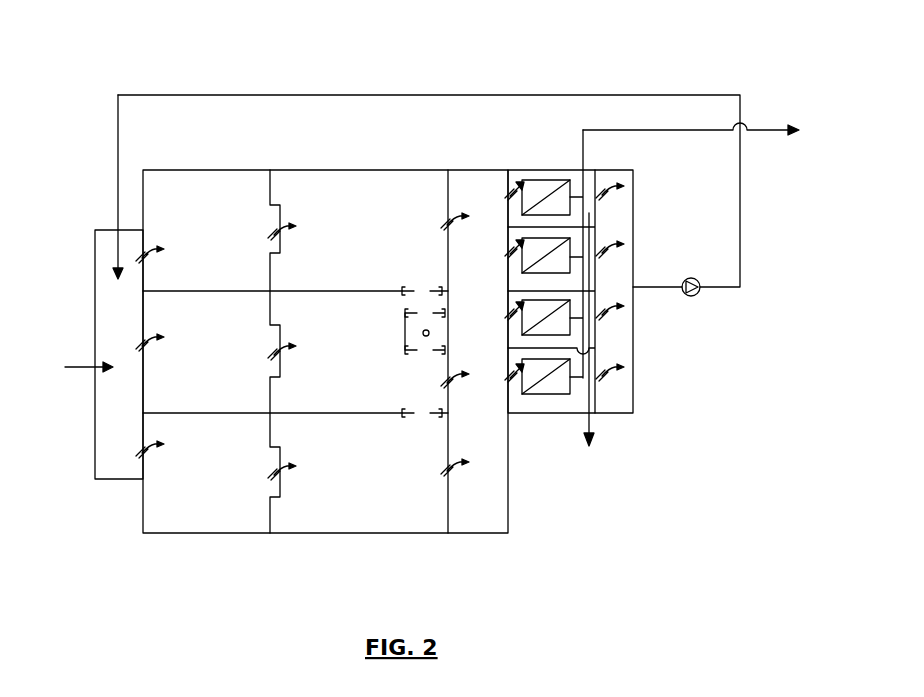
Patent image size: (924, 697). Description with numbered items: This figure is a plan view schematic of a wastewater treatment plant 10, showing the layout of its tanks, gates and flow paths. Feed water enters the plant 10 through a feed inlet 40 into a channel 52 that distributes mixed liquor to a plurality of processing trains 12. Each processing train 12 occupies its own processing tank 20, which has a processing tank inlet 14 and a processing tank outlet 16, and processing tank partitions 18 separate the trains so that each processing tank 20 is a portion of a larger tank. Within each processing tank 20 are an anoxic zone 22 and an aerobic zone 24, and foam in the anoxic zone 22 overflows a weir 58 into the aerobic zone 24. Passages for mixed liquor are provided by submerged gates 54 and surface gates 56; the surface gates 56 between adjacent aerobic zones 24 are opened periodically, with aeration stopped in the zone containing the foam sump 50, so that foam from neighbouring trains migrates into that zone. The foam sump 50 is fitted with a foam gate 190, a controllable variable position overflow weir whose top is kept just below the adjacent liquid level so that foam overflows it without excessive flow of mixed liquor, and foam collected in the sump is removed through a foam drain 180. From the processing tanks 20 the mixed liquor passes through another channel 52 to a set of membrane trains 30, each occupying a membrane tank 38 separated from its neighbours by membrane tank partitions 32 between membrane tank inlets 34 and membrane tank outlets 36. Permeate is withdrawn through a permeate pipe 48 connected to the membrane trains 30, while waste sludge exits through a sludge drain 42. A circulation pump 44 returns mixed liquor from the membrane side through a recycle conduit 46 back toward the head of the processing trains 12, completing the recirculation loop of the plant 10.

The water treatment plant 10 is at (122, 590).
The processing train 12 is at (143, 203).
The processing tank inlet 14 is at (95, 208).
The processing tank outlet 16 is at (455, 215).
The processing tank partition 18 is at (336, 291).
The processing tank 20 is at (250, 170).
The anoxic zone 22 is at (205, 354).
The aerobic zone 24 is at (335, 353).
The membrane train 30 is at (546, 180).
The membrane tank partition 32 is at (583, 350).
The membrane tank inlet 34 is at (515, 110).
The membrane tank outlet 36 is at (603, 195).
The membrane tank 38 is at (573, 170).
The feed inlet 40 is at (65, 367).
The sludge drain 42 is at (593, 425).
The circulation pump 44 is at (702, 295).
The recycle conduit 46 is at (370, 95).
The permeate pipe 48 is at (665, 130).
The foam sump 50 is at (407, 345).
The channel 52 is at (95, 293).
The submerged gate 54 is at (134, 251).
The surface gate 56 is at (422, 289).
The weir 58 is at (268, 497).
The foam drain 180 is at (429, 333).
The foam gate 190 is at (407, 310).